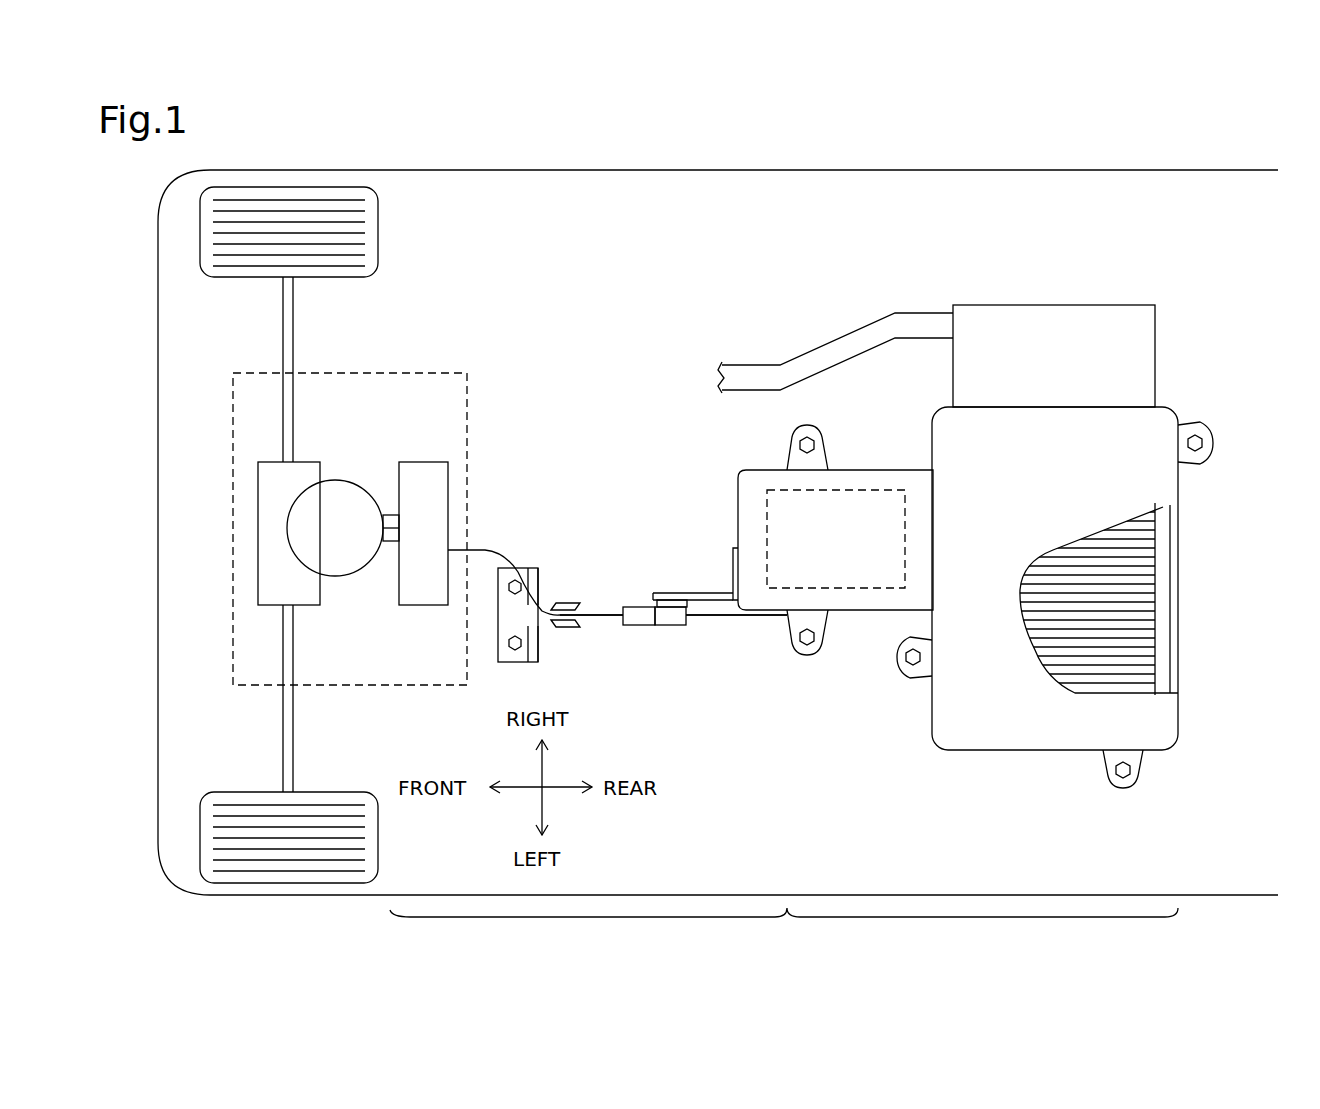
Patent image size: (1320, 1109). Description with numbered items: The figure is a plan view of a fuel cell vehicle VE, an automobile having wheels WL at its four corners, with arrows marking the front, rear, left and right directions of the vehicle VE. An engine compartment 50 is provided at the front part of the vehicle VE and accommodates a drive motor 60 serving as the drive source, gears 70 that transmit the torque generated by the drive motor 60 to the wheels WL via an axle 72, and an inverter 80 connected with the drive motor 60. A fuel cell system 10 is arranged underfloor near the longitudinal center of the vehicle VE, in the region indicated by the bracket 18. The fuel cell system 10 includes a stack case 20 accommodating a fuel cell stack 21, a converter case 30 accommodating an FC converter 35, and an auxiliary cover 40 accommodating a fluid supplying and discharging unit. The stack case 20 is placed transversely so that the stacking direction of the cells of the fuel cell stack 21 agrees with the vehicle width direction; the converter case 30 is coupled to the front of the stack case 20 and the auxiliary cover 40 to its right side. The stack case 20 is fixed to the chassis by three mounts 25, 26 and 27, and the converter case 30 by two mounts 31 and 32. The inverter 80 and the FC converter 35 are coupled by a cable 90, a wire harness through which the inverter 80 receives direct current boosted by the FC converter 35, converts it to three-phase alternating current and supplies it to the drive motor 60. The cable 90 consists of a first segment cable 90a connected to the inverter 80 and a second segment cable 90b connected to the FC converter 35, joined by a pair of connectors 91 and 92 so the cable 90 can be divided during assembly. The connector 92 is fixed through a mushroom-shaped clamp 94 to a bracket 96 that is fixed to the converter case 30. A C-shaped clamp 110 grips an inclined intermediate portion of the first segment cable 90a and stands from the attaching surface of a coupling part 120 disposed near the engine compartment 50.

The fuel cell system 10 is at (1040, 285).
The rear portion of vehicle 18 is at (784, 931).
The stack case 20 is at (1178, 575).
The fuel cell stack 21 is at (1157, 628).
The mount 25 is at (1147, 765).
The mount 26 is at (1193, 423).
The mount 27 is at (912, 675).
The converter case 30 is at (862, 470).
The mount 31 is at (786, 625).
The mount 32 is at (786, 459).
The FC converter 35 is at (767, 512).
The auxiliary cover 40 is at (1130, 305).
The engine compartment 50 is at (432, 373).
The drive motor 60 is at (335, 480).
The gears 70 is at (258, 508).
The axle 72 is at (283, 320).
The inverter 80 is at (442, 462).
The cable 90 is at (592, 605).
The first segment cable 90a is at (578, 621).
The second segment cable 90b is at (714, 620).
The connector 91 is at (640, 625).
The connector 92 is at (670, 625).
The mushroom-shaped clamp 94 is at (657, 602).
The bracket 96 is at (698, 593).
The C-shaped clamp 110 is at (560, 603).
The coupling part 120 is at (522, 568).
The fuel cell vehicle VE is at (1050, 170).
The wheels WL is at (378, 235).